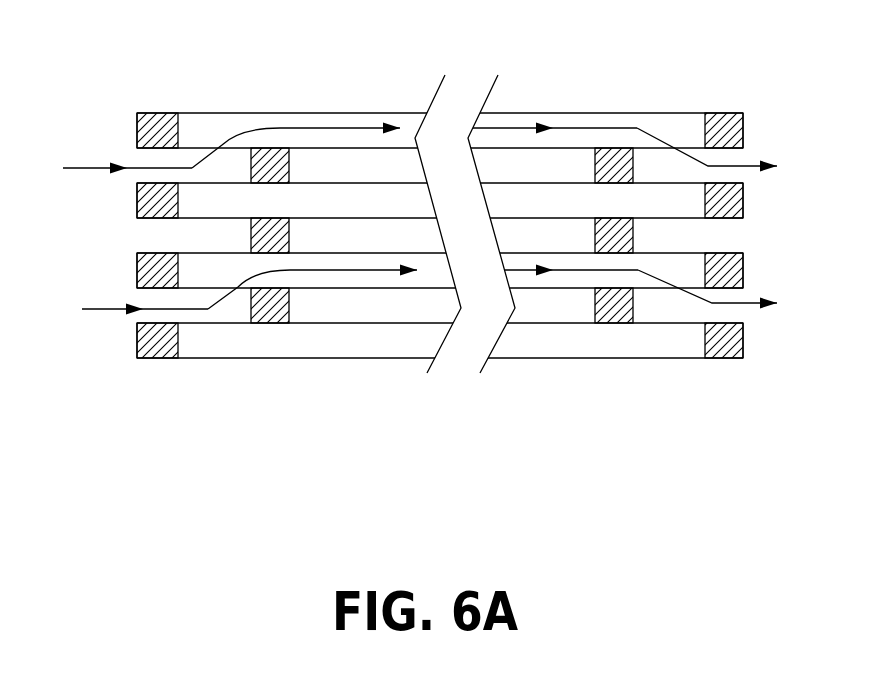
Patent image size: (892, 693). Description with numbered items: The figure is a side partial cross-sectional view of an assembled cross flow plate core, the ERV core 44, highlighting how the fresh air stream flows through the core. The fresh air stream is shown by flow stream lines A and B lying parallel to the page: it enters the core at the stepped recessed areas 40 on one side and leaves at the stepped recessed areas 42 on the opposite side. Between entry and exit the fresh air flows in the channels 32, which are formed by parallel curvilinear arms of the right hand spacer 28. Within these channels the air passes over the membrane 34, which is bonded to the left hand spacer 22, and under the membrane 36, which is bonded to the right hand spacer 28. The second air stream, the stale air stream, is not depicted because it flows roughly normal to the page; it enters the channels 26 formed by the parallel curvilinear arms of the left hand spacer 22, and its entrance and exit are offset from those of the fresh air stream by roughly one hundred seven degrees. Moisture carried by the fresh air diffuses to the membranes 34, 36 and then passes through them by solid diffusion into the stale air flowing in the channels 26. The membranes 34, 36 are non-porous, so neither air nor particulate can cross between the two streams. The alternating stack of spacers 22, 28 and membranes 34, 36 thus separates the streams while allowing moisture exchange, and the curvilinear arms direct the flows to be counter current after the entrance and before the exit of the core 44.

The left hand spacer 22 is at (248, 322).
The channels 26 is at (327, 310).
The right hand spacer 28 is at (137, 272).
The channels 32 is at (592, 127).
The membrane 34 is at (368, 292).
The membrane 36 is at (213, 253).
The stepped recessed areas 40 is at (153, 162).
The stepped recessed areas 42 is at (733, 295).
The ERV core 44 is at (623, 432).